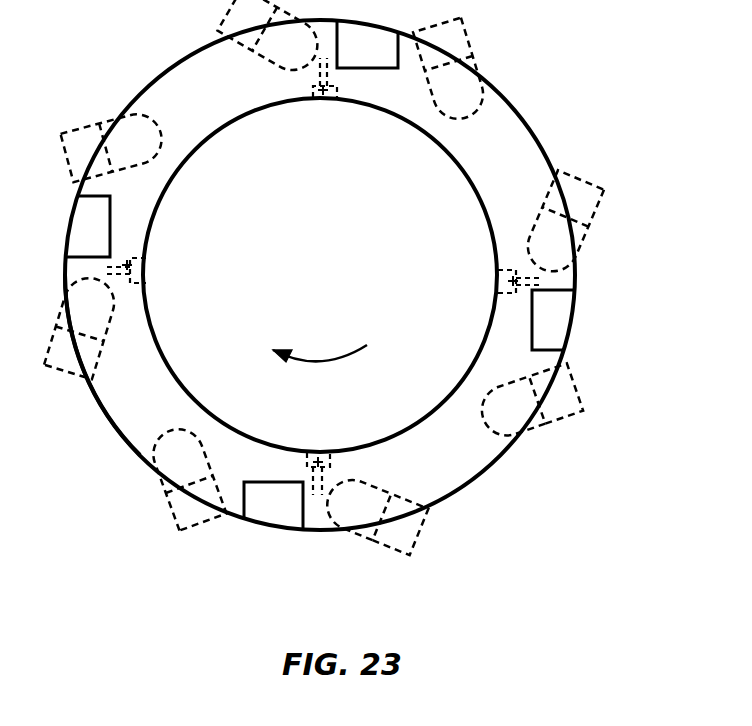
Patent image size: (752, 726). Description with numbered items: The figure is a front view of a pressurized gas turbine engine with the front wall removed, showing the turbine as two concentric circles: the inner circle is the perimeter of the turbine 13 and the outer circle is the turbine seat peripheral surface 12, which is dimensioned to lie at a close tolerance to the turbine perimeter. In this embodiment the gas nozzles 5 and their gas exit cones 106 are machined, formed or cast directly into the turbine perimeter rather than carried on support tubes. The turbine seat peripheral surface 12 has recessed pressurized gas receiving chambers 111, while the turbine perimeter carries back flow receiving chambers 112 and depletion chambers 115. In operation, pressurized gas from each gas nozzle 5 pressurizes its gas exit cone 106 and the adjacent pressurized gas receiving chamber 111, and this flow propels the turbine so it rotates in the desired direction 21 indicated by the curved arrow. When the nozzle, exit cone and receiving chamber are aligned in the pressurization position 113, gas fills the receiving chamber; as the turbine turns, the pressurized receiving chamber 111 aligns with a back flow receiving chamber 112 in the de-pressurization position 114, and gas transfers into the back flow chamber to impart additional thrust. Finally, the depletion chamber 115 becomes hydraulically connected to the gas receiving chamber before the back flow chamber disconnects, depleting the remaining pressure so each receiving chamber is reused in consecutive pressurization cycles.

The gas nozzle 5 is at (538, 276).
The turbine seat peripheral surface 12 is at (135, 452).
The perimeter of the turbine 13 is at (106, 413).
The desired direction 21 is at (322, 360).
The gas exit cone 106 is at (563, 240).
The pressurized gas receiving chamber 111 is at (415, 537).
The back flow receiving chamber 112 is at (485, 433).
The pressurization position 113 is at (352, 533).
The de-pressurization position 114 is at (516, 437).
The depletion chamber 115 is at (263, 513).